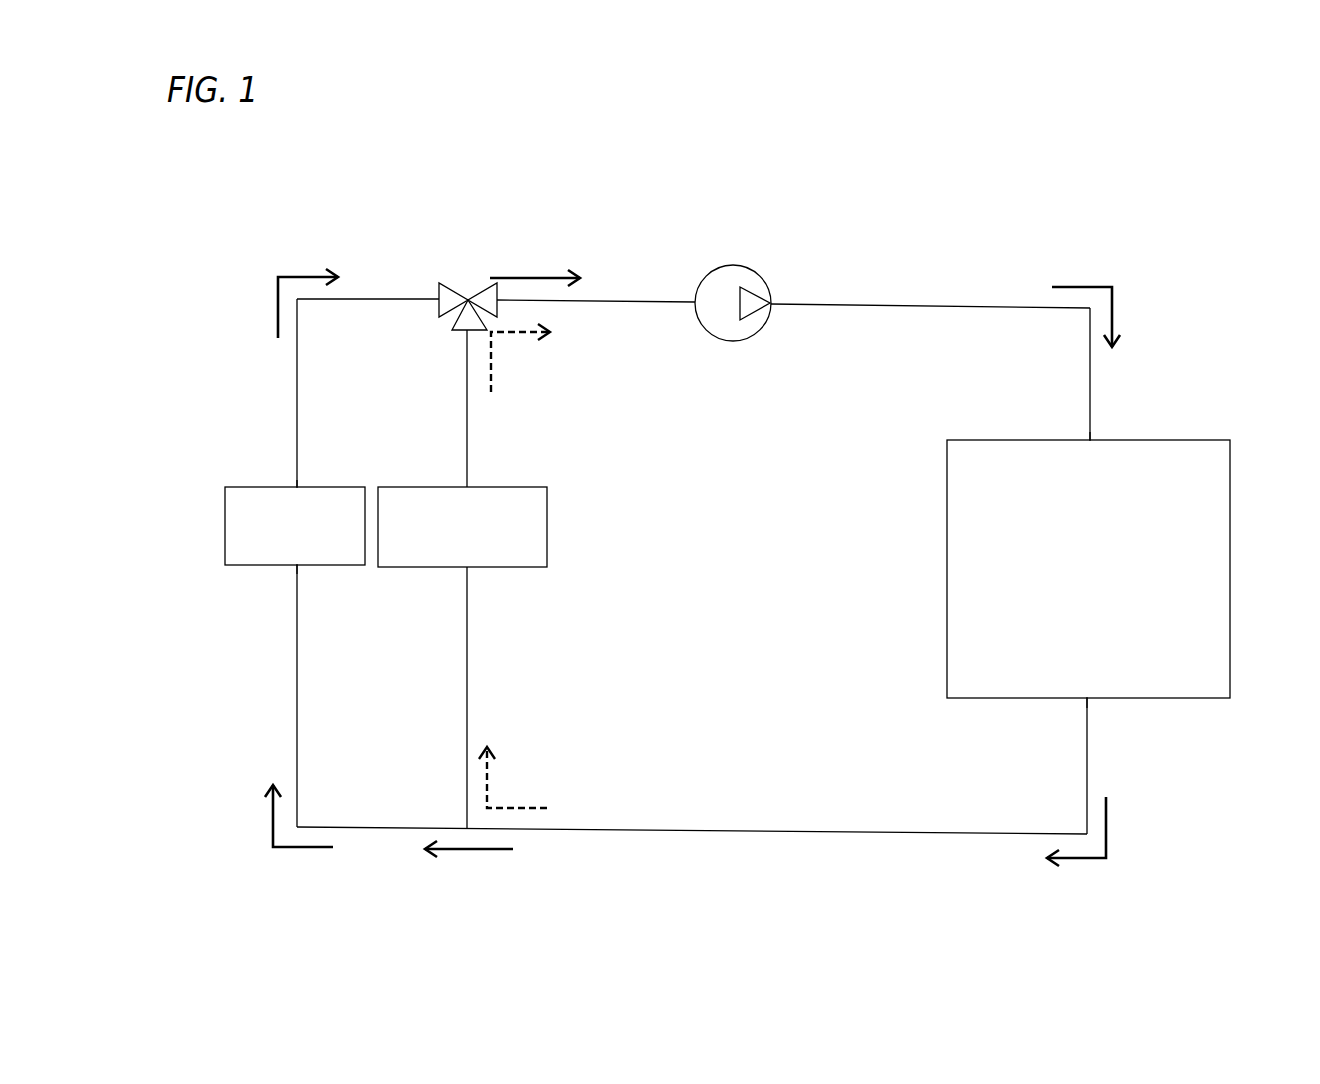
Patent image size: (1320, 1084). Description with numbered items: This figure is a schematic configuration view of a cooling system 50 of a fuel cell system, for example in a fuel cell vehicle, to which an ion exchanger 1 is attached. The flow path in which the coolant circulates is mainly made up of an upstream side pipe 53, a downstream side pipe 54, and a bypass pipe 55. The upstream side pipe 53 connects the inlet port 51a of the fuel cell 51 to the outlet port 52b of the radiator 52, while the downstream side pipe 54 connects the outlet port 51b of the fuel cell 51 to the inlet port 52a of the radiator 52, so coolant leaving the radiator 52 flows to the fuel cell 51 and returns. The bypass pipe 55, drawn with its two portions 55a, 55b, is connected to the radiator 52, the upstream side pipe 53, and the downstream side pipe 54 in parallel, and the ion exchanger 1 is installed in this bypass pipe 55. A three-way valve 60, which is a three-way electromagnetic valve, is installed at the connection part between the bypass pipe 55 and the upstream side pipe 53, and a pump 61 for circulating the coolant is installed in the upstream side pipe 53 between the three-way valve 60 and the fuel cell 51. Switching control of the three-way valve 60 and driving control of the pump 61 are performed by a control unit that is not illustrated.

The ion exchanger 1 is at (490, 487).
The cooling system 50 is at (358, 227).
The fuel cell 51 is at (1180, 440).
The inlet port 51a is at (1092, 440).
The outlet port 51b is at (1088, 700).
The radiator 52 is at (282, 487).
The inlet port 52a is at (297, 565).
The outlet port 52b is at (297, 487).
The upstream side pipe 53 is at (876, 306).
The downstream side pipe 54 is at (718, 832).
The bypass pipe 55 is at (537, 576).
The bypass pipe 55a is at (466, 727).
The bypass pipe 55b is at (468, 406).
The three-way valve 60 is at (468, 300).
The pump 61 is at (733, 341).